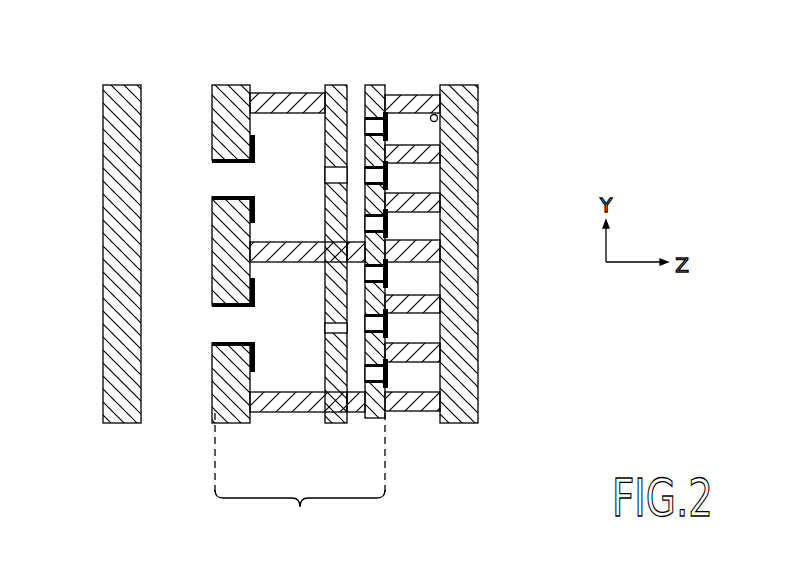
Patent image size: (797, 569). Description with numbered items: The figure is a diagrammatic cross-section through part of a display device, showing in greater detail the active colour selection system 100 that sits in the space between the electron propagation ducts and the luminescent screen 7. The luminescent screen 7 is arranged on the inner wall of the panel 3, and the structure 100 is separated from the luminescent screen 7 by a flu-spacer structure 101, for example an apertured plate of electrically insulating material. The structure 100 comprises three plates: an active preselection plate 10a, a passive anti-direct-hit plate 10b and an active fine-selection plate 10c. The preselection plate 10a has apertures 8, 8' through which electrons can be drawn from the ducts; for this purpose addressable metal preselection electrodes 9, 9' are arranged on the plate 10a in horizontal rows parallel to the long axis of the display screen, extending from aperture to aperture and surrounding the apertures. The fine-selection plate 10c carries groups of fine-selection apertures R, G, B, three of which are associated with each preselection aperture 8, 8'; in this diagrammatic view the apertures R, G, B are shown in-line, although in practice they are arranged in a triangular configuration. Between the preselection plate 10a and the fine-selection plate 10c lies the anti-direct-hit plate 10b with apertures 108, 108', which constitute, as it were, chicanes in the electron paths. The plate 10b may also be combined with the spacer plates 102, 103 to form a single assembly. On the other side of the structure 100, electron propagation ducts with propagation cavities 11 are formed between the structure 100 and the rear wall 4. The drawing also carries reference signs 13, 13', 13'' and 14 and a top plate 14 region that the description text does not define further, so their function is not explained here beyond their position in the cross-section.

The rear wall 4 is at (118, 212).
The propagation cavity 11 is at (165, 102).
The aperture 8 is at (244, 231).
The preselection electrode 9 is at (248, 180).
The preselection electrode 9' is at (250, 324).
The aperture 8' is at (205, 389).
The top plate 14 is at (287, 76).
The spacer plate 103 is at (290, 93).
The preselection plate 10a is at (235, 413).
The anti-direct-hit plate 10b is at (340, 413).
The fine-selection plate 10c is at (373, 423).
The aperture 108 is at (342, 107).
The aperture 108' is at (306, 360).
The spacer plate 102 is at (361, 112).
The flu-spacer structure 101 is at (427, 413).
The fine-selection aperture R is at (397, 93).
The bar 13 is at (412, 76).
The bar 13' is at (452, 152).
The bar 13'' is at (457, 260).
The fine-selection aperture G is at (387, 182).
The fine-selection aperture B is at (386, 228).
The panel 3 is at (438, 118).
The luminescent screen 7 is at (445, 92).
The active colour selection system 100 is at (300, 475).